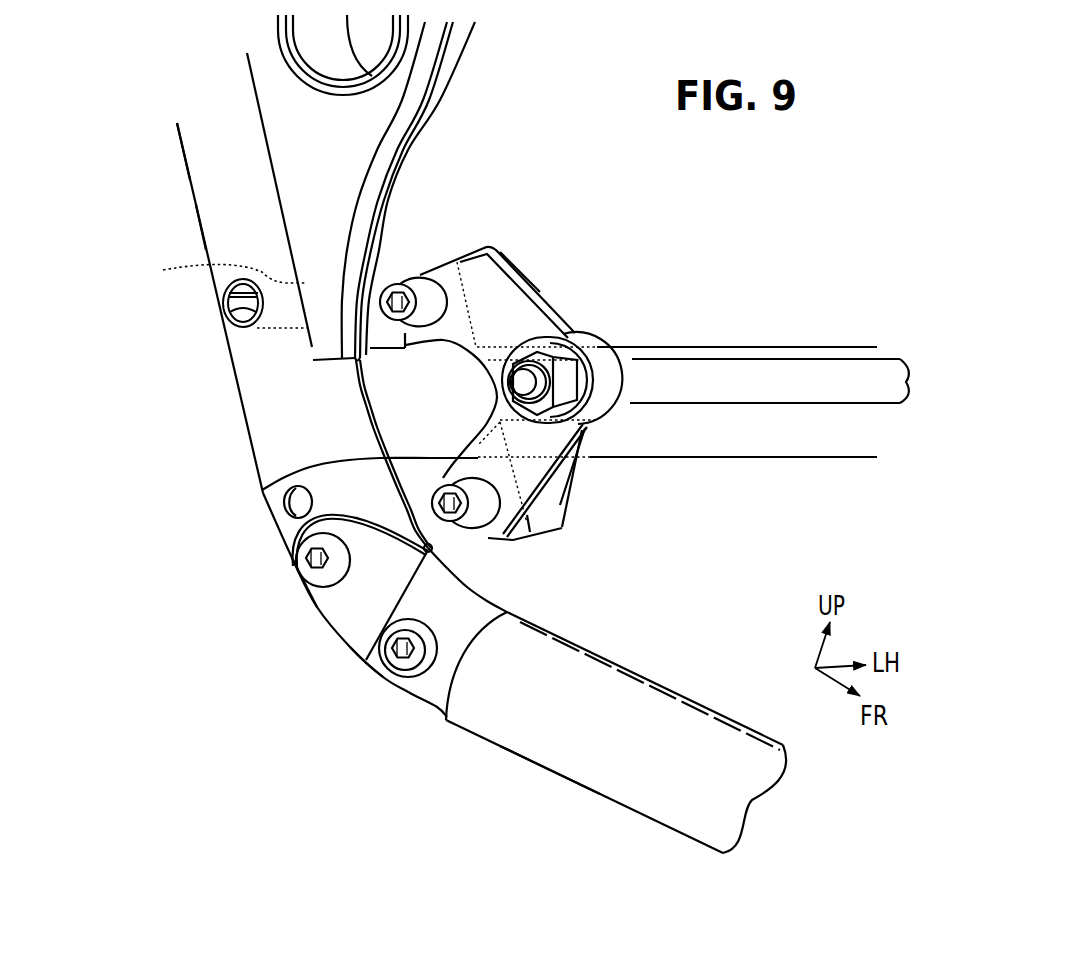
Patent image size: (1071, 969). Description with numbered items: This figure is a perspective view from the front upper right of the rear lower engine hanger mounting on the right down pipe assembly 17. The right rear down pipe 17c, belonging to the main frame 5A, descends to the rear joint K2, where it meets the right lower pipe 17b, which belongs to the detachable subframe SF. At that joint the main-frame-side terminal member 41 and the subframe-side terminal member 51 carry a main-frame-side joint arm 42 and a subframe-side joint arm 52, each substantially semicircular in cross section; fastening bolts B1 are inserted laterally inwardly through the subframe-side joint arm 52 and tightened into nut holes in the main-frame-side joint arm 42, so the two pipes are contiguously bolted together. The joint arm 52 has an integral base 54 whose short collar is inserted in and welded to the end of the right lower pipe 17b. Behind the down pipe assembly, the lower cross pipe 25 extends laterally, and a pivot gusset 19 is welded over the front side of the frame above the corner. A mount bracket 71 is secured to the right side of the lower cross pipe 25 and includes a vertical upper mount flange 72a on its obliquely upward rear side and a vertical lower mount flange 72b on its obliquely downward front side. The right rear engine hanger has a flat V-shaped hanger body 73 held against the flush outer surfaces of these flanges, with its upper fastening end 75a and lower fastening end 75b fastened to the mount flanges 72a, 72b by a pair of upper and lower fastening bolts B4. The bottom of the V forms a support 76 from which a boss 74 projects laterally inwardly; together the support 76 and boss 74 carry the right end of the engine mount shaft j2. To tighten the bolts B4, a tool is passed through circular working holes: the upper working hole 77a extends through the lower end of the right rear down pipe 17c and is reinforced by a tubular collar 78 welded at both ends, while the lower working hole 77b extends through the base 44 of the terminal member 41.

The right down pipe assembly 17 is at (186, 182).
The right rear down pipe 17c is at (197, 150).
The main frame 5A is at (177, 220).
The tubular collar 78 is at (218, 291).
The upper working hole 77a is at (230, 310).
The pivot gusset 19 is at (437, 97).
The mount bracket 71 is at (498, 246).
The upper mount flange 72a is at (449, 264).
The hanger body 73 is at (534, 292).
The upper fastening end 75a is at (425, 268).
The lower fastening end 75b is at (500, 553).
The lower mount flange 72b is at (513, 537).
The support 76 is at (553, 433).
The fastening bolt B4 is at (390, 283).
The boss 74 is at (607, 355).
The engine mount shaft j2 is at (768, 365).
The lower cross pipe 25 is at (707, 450).
The main-frame-side terminal member 41 is at (258, 488).
The base 44 is at (283, 503).
The lower working hole 77b is at (289, 514).
The subframe-side joint arm 52 is at (352, 608).
The main-frame-side joint arm 42 is at (392, 610).
The fastening bolt B1 is at (294, 568).
The rear joint K2 is at (305, 645).
The subframe-side terminal member 51 is at (364, 661).
The base 54 is at (436, 703).
The right lower pipe 17b is at (625, 777).
The subframe SF is at (546, 769).